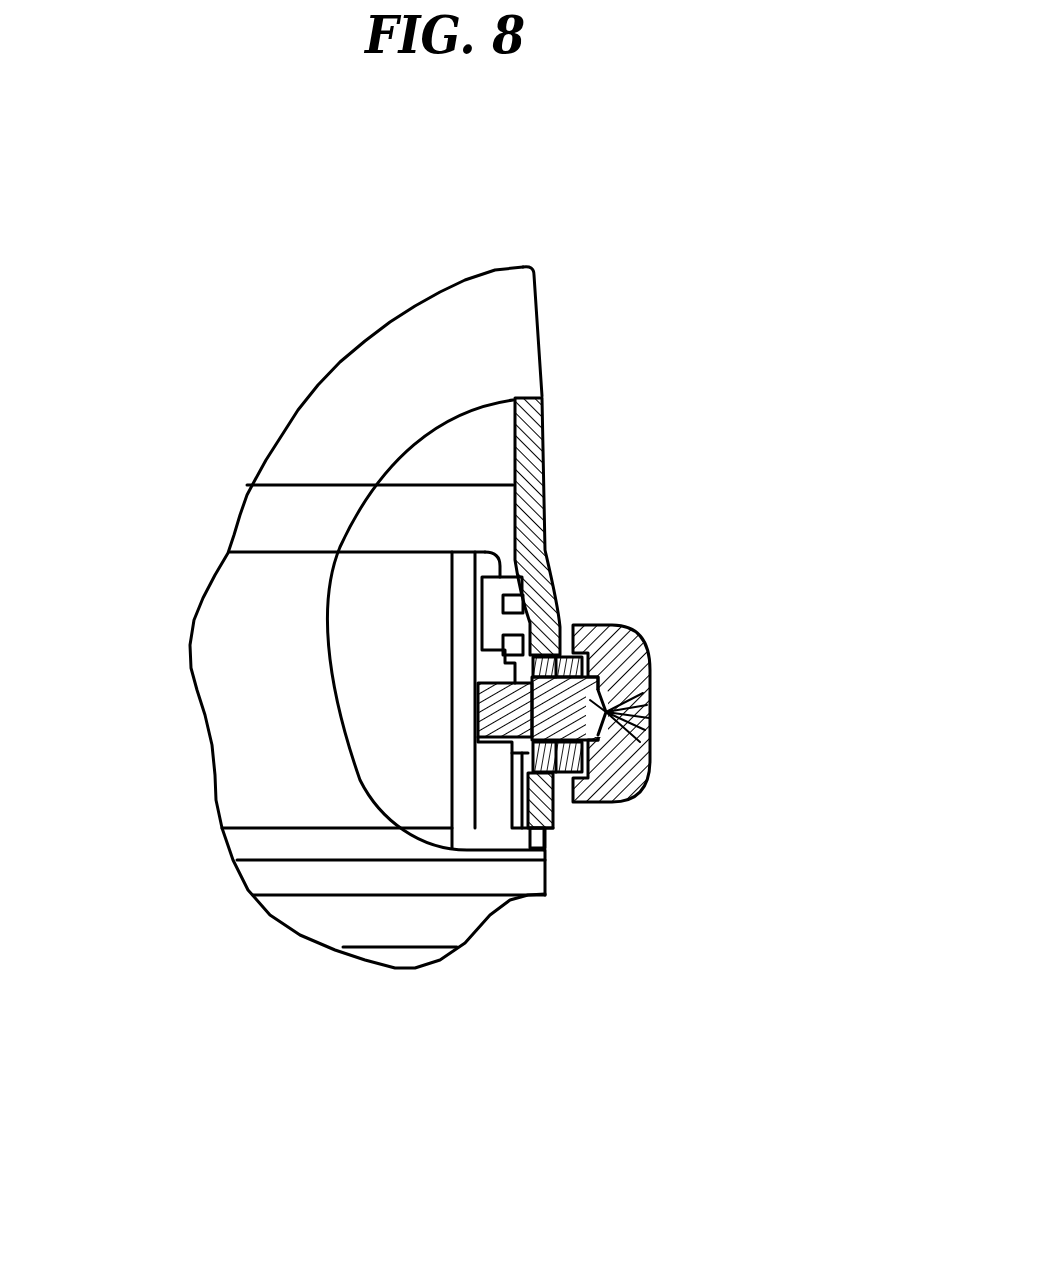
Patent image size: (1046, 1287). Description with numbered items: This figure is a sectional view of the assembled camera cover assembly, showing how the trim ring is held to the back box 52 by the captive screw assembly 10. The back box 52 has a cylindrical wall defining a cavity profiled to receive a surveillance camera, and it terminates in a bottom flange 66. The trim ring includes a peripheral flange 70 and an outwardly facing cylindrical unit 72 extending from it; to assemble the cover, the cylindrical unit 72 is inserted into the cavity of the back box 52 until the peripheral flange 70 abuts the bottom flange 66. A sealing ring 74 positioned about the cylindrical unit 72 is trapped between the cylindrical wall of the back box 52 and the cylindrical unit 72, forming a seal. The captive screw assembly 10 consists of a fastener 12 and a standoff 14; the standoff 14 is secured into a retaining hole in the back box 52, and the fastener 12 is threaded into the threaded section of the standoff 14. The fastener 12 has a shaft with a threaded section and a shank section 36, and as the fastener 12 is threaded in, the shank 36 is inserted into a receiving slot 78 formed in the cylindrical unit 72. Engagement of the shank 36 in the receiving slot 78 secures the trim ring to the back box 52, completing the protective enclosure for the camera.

The captive screw assembly 10 is at (727, 694).
The fastener 12 is at (640, 782).
The standoff 14 is at (558, 777).
The shank section 36 is at (478, 697).
The back box 52 is at (540, 323).
The bottom flange 66 is at (258, 838).
The peripheral flange 70 is at (548, 882).
The outwardly facing cylindrical unit 72 is at (477, 503).
The sealing ring 74 is at (553, 592).
The receiving slot 78 is at (478, 738).